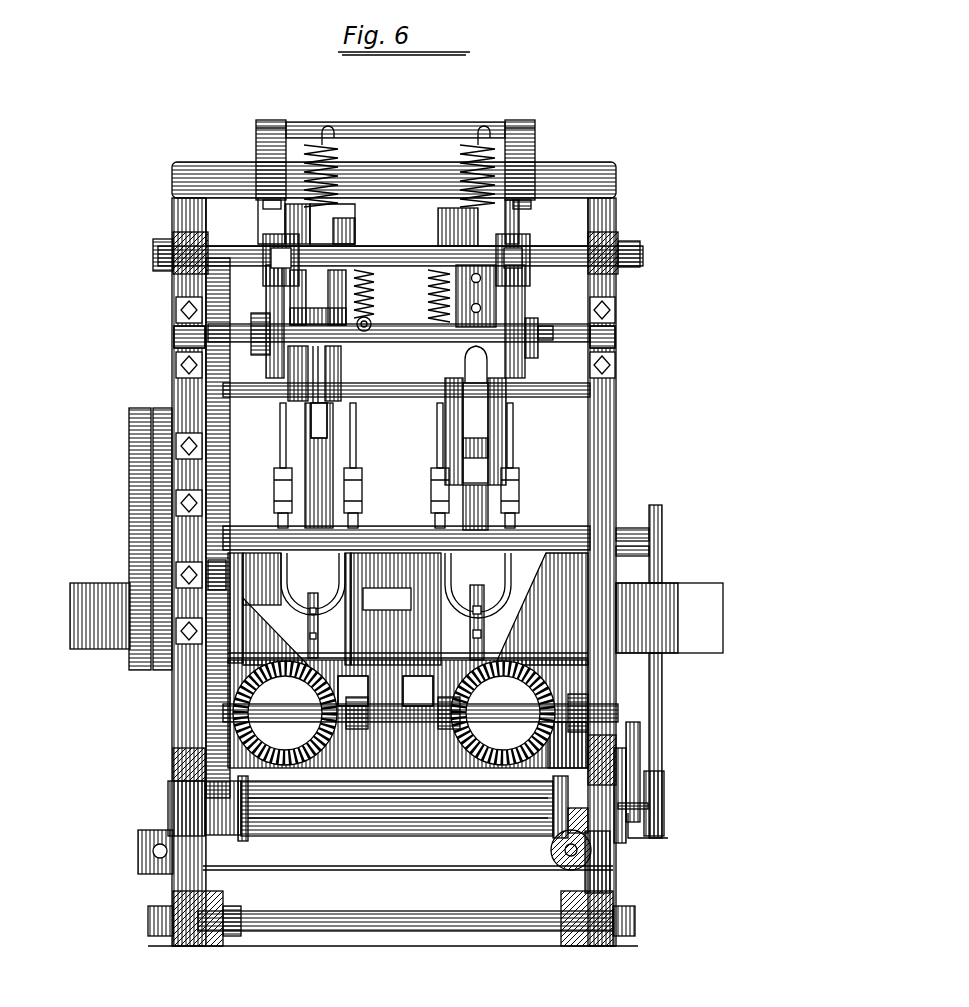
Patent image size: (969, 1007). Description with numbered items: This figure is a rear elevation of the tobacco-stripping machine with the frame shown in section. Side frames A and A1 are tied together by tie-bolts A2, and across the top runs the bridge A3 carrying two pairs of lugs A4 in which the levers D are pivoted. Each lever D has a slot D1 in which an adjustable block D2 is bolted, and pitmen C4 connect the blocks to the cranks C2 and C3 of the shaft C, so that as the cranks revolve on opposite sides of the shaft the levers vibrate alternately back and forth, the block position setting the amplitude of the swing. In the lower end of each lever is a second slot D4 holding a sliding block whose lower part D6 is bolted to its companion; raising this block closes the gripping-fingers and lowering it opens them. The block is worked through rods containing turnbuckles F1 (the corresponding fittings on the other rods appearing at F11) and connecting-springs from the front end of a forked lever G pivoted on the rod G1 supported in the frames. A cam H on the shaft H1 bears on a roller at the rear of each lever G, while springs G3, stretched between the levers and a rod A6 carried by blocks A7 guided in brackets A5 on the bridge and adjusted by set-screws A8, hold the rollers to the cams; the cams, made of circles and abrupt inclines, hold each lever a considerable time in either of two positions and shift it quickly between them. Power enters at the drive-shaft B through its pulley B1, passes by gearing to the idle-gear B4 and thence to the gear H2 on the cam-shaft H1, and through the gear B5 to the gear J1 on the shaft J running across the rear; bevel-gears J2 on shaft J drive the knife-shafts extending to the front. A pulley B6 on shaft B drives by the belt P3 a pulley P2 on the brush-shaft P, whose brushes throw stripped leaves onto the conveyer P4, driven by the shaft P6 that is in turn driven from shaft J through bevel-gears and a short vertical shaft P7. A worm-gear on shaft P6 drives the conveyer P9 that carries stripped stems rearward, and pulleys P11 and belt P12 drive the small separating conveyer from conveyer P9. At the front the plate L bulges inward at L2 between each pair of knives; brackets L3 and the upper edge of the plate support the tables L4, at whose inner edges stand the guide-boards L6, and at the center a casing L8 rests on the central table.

The side frame A is at (600, 425).
The side frame A1 is at (175, 378).
The tie-bolts A2 is at (391, 914).
The bridge A3 is at (595, 160).
The lugs A4 is at (348, 197).
The brackets A5 is at (256, 142).
The rod A6 is at (432, 118).
The blocks A7 is at (265, 112).
The set-screws A8 is at (256, 200).
The drive-shaft B is at (415, 523).
The pulley B1 is at (140, 472).
The idle-gear B4 is at (212, 441).
The gear B5 is at (218, 565).
The pulley B6 is at (654, 558).
The shaft C is at (594, 378).
The crank C2 is at (485, 452).
The crank C3 is at (335, 362).
The pitmen C4 is at (282, 358).
The lever D is at (327, 451).
The slot D1 is at (455, 354).
The blocks D2 is at (283, 401).
The second slot D4 is at (303, 633).
The sliding-block part D6 is at (305, 591).
The turnbuckle F1 is at (364, 314).
The coupling F11 is at (358, 484).
The forked lever G is at (428, 219).
The rod G1 is at (402, 291).
The springs G3 is at (331, 146).
The cam H is at (168, 301).
The shaft H1 is at (558, 349).
The gear H2 is at (200, 326).
The shaft J is at (577, 693).
The gear J1 is at (210, 680).
The bevel-gears J2 is at (312, 716).
The plate L is at (392, 764).
The inward bulge L2 is at (313, 777).
The brackets L3 is at (163, 770).
The tables L4 is at (336, 684).
The vertical boards L6 is at (64, 614).
The casing L8 is at (396, 609).
The shaft P is at (634, 806).
The pulley P2 is at (656, 811).
The belt P3 is at (655, 703).
The conveyer P4 is at (431, 862).
The shaft P6 is at (574, 850).
The short vertical shaft P7 is at (535, 778).
The conveyer P9 is at (395, 815).
The pulleys P11 is at (633, 752).
The belt P12 is at (633, 726).